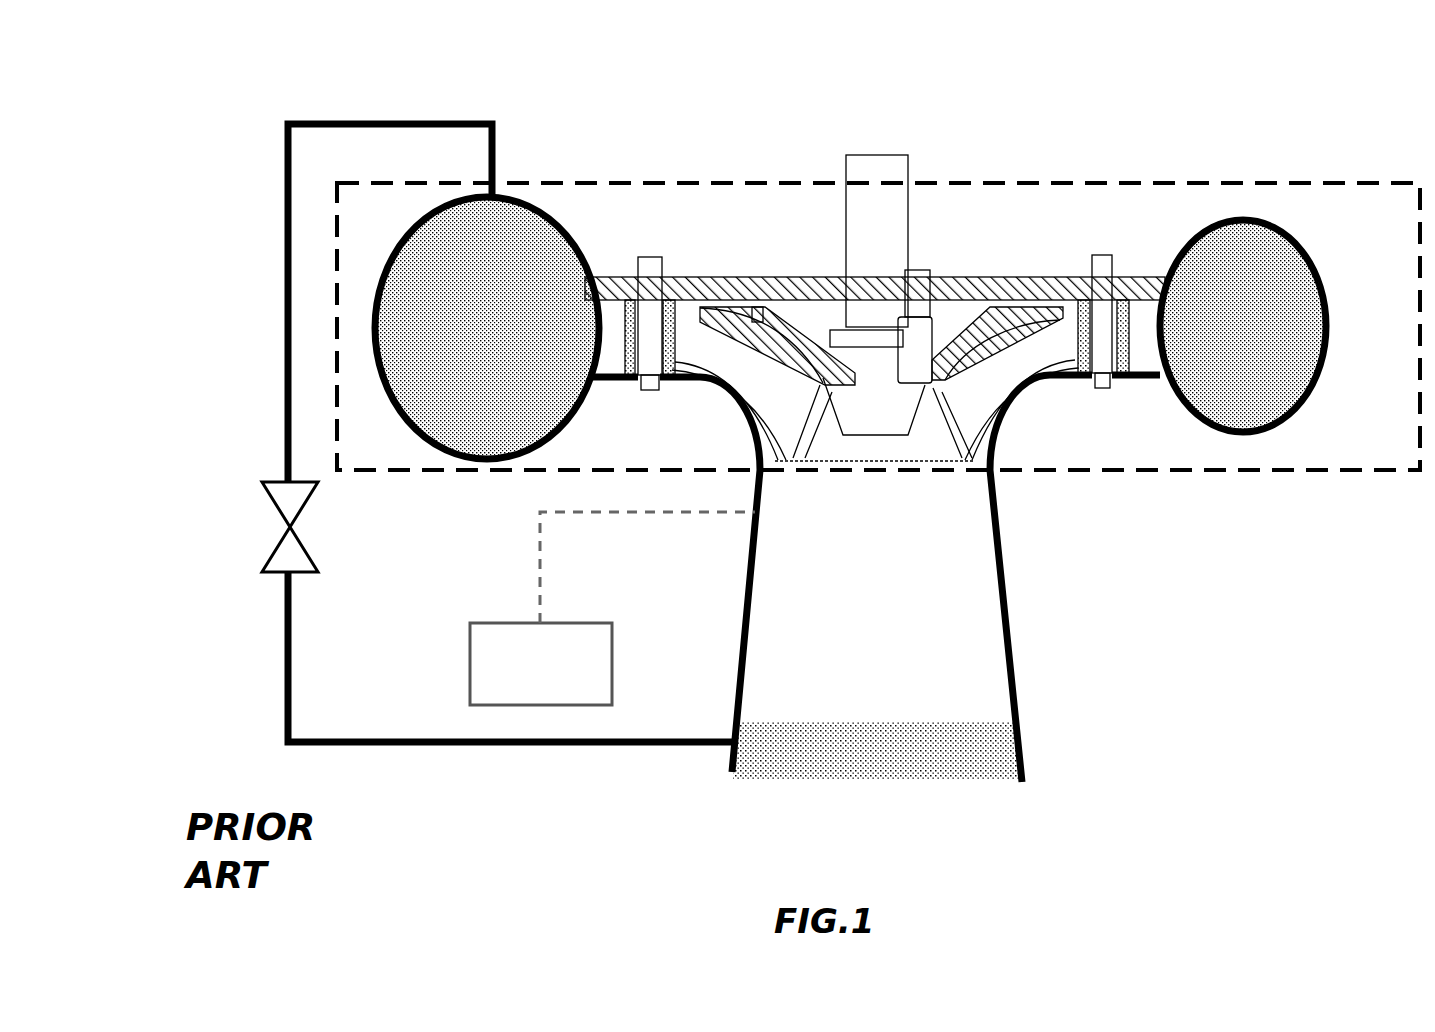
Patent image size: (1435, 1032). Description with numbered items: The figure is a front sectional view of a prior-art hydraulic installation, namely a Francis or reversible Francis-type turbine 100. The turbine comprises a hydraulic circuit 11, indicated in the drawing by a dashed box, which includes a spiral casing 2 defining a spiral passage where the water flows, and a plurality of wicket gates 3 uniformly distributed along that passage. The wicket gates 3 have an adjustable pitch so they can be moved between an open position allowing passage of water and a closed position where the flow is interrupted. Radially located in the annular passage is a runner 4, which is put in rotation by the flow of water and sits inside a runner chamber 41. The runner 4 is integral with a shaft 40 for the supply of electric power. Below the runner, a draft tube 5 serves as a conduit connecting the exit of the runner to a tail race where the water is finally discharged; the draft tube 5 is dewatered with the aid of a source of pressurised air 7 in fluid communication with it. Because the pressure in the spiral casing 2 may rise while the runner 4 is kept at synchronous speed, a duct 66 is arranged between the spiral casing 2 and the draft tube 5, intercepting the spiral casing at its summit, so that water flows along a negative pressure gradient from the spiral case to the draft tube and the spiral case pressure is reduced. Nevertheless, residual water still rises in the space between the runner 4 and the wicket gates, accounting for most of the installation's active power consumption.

The Francis or reversible Francis-type turbine 100 is at (246, 105).
The spiral casing 2 is at (517, 293).
The wicket gates 3 is at (1092, 343).
The runner 4 is at (882, 461).
The draft tube 5 is at (883, 584).
The source of pressurised air 7 is at (554, 672).
The hydraulic circuit 11 is at (1068, 232).
The shaft 40 is at (879, 172).
The runner chamber 41 is at (828, 326).
The duct 66 is at (287, 377).